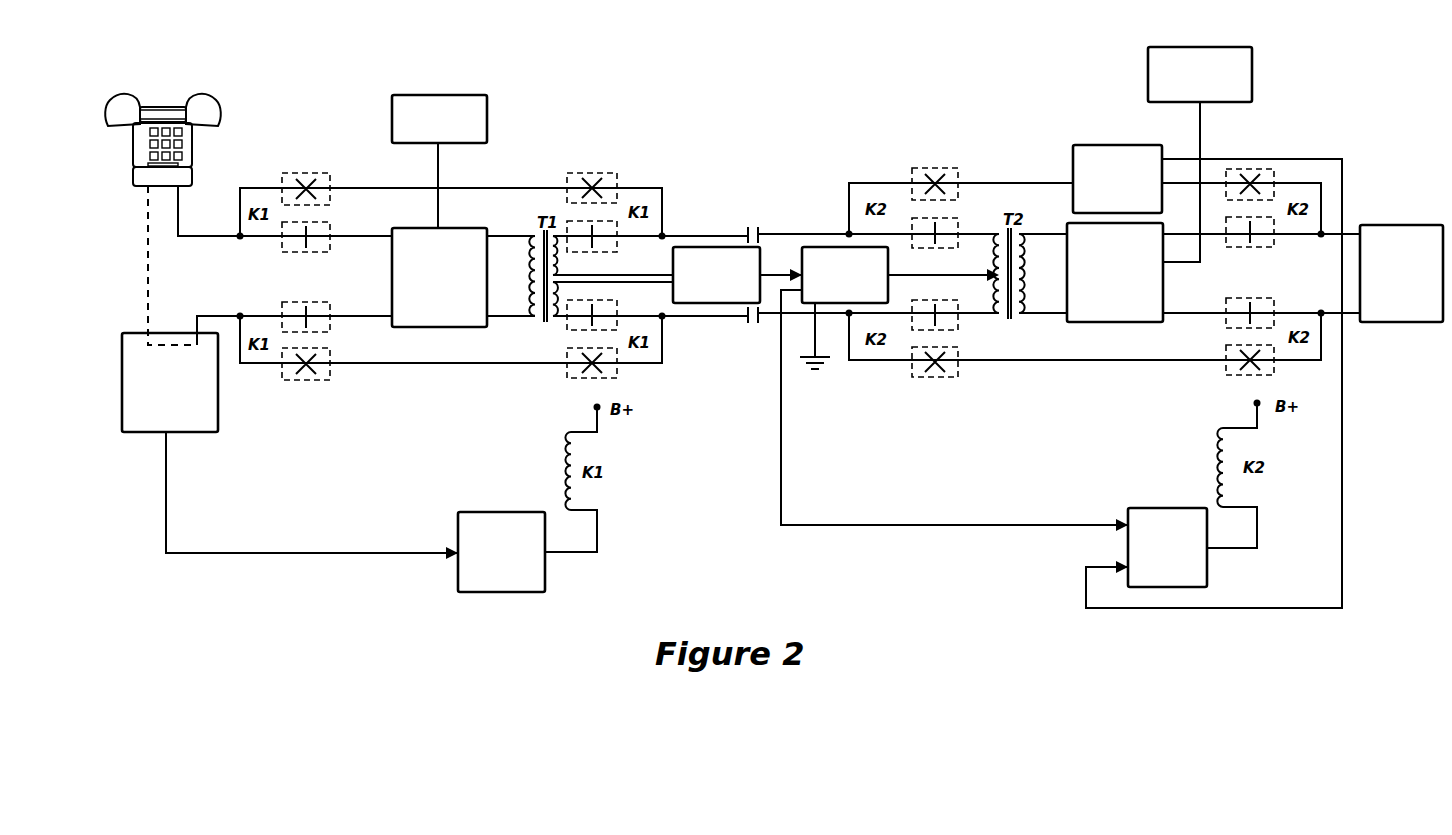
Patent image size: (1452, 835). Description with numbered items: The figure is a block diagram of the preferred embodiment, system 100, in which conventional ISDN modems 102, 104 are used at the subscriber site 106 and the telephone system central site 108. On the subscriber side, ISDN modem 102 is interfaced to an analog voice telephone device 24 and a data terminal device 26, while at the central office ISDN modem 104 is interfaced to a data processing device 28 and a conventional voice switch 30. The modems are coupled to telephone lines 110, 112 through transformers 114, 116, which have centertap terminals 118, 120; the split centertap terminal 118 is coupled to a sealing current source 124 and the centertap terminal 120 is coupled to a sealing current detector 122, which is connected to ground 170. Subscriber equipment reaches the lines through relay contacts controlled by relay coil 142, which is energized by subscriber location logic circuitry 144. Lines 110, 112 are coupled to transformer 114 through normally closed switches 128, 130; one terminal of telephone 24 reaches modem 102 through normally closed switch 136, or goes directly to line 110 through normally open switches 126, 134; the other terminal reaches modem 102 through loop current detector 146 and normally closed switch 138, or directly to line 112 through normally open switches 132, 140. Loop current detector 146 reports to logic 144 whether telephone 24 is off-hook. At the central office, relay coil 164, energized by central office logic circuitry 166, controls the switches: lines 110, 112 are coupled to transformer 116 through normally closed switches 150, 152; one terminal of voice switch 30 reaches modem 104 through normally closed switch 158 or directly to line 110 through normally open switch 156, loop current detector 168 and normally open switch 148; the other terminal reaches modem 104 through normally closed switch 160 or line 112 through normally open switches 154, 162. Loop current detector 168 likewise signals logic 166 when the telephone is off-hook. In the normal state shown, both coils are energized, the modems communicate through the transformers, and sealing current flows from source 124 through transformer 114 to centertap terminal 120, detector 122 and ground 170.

The analog voice telephone device 24 is at (215, 110).
The data terminal device 26 is at (487, 105).
The data processing device 28 is at (1200, 47).
The voice switch 30 is at (1390, 225).
The system 100 is at (780, 158).
The ISDN modem 102 is at (392, 278).
The ISDN modem 104 is at (1163, 305).
The subscriber site 106 is at (410, 398).
The telephone system central site 108 is at (1127, 350).
The telephone line 110 is at (665, 234).
The telephone line 112 is at (705, 318).
The transformer 114 is at (532, 318).
The transformer 116 is at (1003, 316).
The split centertap terminal 118 is at (562, 279).
The centertap terminal 120 is at (980, 277).
The sealing current detector 122 is at (828, 247).
The sealing current source 124 is at (712, 247).
The switch 126 is at (598, 173).
The switch 128 is at (617, 240).
The switch 130 is at (617, 310).
The switch 132 is at (617, 366).
The switch 134 is at (313, 173).
The switch 136 is at (330, 232).
The switch 138 is at (290, 302).
The switch 140 is at (330, 357).
The relay coil 142 is at (570, 455).
The subscriber location logic circuitry 144 is at (500, 512).
The loop current detector 146 is at (197, 432).
The switch 148 is at (940, 168).
The switch 150 is at (958, 222).
The switch 152 is at (958, 322).
The switch 154 is at (912, 368).
The switch 156 is at (1262, 169).
The switch 158 is at (1273, 240).
The switch 160 is at (1273, 306).
The switch 162 is at (1225, 360).
The relay coil 164 is at (1222, 462).
The telephone system central office location logic circuitry 166 is at (1158, 508).
The loop current detector 168 is at (1115, 145).
The ground 170 is at (818, 352).